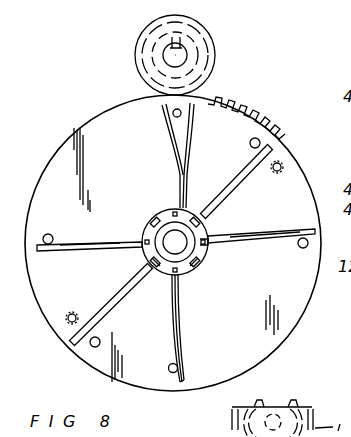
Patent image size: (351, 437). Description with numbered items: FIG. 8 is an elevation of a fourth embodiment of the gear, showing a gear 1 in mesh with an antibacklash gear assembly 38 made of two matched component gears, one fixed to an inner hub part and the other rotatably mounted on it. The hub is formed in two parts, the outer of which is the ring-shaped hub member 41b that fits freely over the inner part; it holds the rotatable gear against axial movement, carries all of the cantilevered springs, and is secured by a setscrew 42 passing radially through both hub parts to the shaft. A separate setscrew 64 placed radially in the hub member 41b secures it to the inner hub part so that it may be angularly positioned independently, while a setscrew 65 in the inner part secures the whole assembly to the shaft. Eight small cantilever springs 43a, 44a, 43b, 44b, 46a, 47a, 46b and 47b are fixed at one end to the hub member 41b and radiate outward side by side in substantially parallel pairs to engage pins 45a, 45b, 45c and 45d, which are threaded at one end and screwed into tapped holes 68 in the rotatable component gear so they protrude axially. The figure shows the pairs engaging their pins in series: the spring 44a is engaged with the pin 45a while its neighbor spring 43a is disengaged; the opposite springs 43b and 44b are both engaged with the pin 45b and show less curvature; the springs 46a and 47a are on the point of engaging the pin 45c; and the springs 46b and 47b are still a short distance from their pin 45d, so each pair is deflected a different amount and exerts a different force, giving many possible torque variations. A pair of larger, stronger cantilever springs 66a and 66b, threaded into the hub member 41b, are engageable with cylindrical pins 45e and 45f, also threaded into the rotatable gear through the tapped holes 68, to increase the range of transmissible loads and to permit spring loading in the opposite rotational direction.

The gear 1 is at (218, 43).
The antibacklash gear assembly 38 is at (304, 176).
The setscrew 42 is at (143, 220).
The hub member 41b is at (204, 225).
The setscrew 64 is at (198, 272).
The setscrew 65 is at (158, 272).
The cantilever spring 46a is at (80, 251).
The cantilever spring 47a is at (90, 267).
The pin 45c is at (47, 234).
The cantilever spring 46b is at (244, 243).
The cantilever spring 47b is at (265, 257).
The pin 45d is at (301, 248).
The cantilever spring 66a is at (108, 312).
The pin 45f is at (89, 348).
The cantilever spring 66b is at (243, 176).
The pin 45e is at (257, 137).
The tapped holes 68 is at (279, 160).
The cantilever spring 43a is at (191, 126).
The cantilever spring 44a is at (172, 124).
The pin 45a is at (181, 110).
The cantilever spring 43b is at (182, 340).
The cantilever spring 44b is at (205, 328).
The pin 45b is at (172, 374).